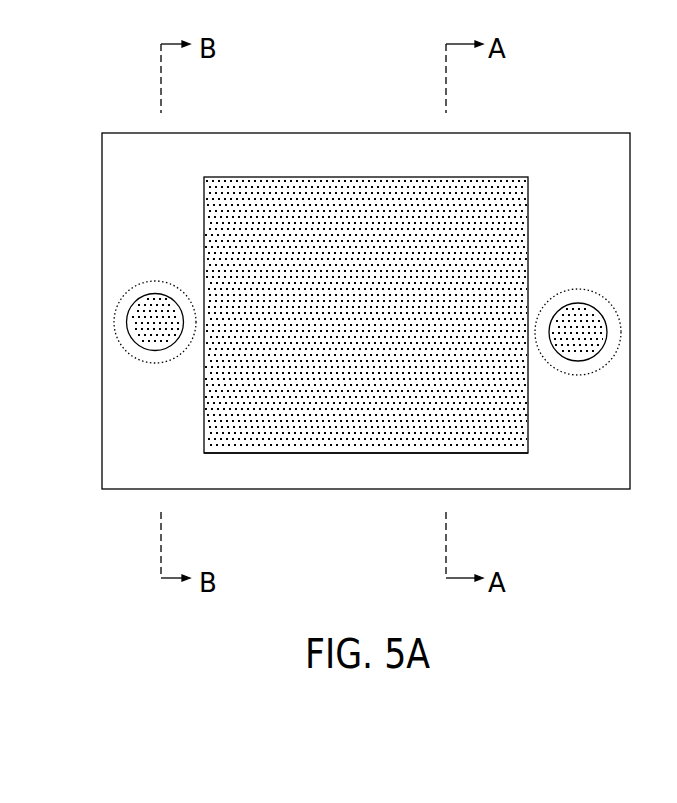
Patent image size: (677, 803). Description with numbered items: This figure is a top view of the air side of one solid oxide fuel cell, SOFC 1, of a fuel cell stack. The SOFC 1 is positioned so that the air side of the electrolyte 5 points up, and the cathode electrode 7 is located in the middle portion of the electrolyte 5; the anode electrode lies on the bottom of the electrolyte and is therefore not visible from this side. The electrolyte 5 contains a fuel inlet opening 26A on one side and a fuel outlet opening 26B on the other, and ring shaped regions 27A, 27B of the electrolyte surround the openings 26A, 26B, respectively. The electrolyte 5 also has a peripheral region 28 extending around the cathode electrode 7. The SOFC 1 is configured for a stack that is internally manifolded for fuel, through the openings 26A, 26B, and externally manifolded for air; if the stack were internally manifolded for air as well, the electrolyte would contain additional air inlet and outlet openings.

The SOFC 1 is at (614, 71).
The electrolyte 5 is at (274, 148).
The cathode electrode 7 is at (376, 196).
The fuel inlet opening 26A is at (128, 323).
The fuel outlet opening 26B is at (598, 341).
The ring shaped region 27A is at (118, 305).
The ring shaped region 27B is at (608, 302).
The peripheral region 28 is at (378, 476).